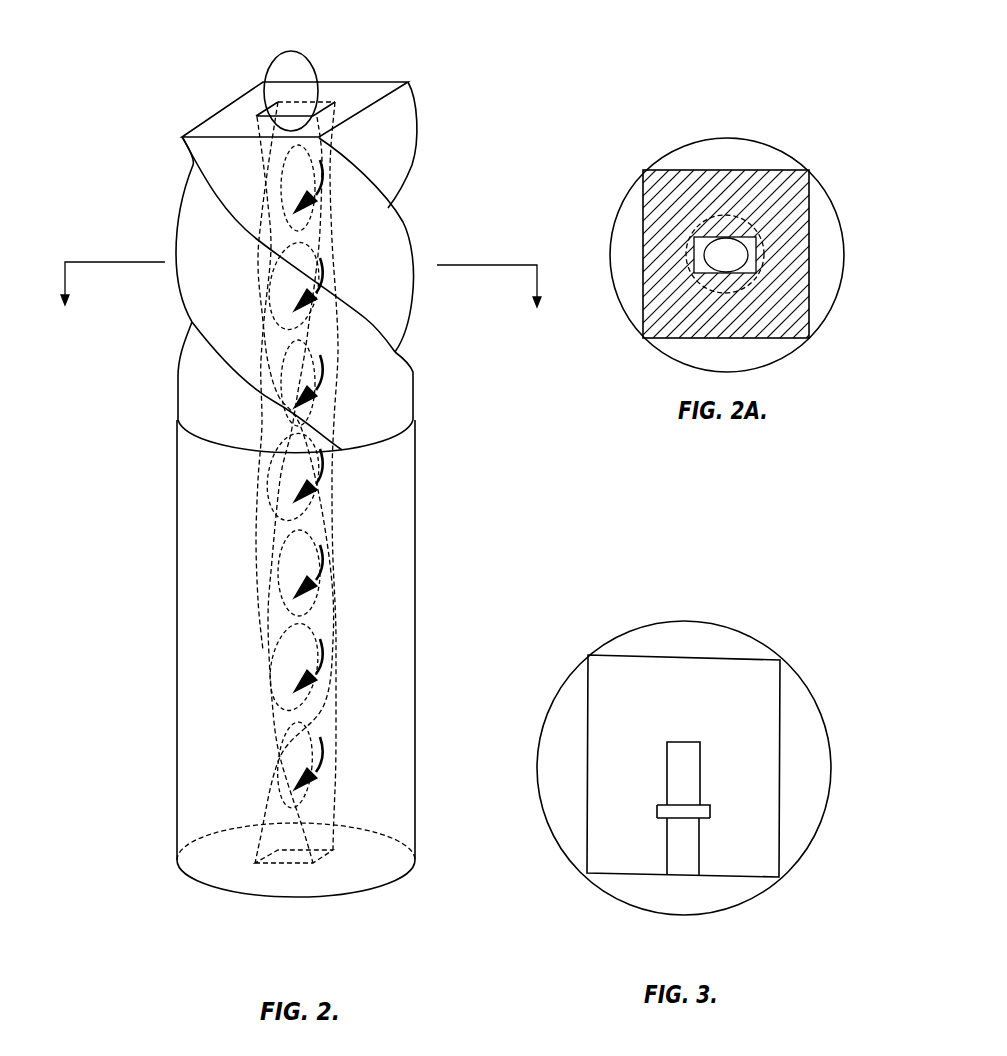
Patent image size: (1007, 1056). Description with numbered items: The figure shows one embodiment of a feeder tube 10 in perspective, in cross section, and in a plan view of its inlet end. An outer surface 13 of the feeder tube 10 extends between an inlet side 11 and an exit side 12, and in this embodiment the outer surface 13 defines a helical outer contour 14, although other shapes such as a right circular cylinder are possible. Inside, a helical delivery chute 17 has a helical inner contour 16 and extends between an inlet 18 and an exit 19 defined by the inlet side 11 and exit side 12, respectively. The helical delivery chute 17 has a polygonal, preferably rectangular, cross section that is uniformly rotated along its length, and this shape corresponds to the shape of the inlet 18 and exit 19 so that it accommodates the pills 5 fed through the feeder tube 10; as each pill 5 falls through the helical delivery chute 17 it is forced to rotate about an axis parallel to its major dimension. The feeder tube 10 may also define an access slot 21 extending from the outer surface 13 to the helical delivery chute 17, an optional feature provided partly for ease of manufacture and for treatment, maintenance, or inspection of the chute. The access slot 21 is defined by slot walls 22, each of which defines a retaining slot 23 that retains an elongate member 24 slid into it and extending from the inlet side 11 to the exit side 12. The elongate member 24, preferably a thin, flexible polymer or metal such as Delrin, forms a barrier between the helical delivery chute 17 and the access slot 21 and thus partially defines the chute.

In FIG. 2A, the pill 5 is at (711, 250).
In FIG. 2, the feeder tube 10 is at (138, 153).
In FIG. 2A, the feeder tube 10 is at (845, 195).
In FIG. 3, the feeder tube 10 is at (792, 641).
In FIG. 2, the inlet side 11 is at (363, 85).
In FIG. 2A, the inlet side 11 is at (688, 178).
In FIG. 3, the inlet side 11 is at (644, 680).
In FIG. 2, the exit side 12 is at (393, 880).
In FIG. 2, the outer surface 13 is at (413, 247).
In FIG. 3, the outer surface 13 is at (812, 850).
In FIG. 2, the helical outer contour 14 is at (424, 298).
In FIG. 2, the helical inner contour 16 is at (383, 632).
In FIG. 2, the helical delivery chute 17 is at (334, 406).
In FIG. 2A, the helical delivery chute 17 is at (723, 280).
In FIG. 3, the helical delivery chute 17 is at (700, 779).
In FIG. 2, the inlet 18 is at (306, 112).
In FIG. 2A, the inlet 18 is at (751, 232).
In FIG. 2, the exit 19 is at (320, 857).
In FIG. 3, the access slot 21 is at (684, 856).
In FIG. 3, the slot walls 22 is at (673, 862).
In FIG. 3, the retaining slot 23 is at (662, 820).
In FIG. 3, the elongate member 24 is at (680, 812).